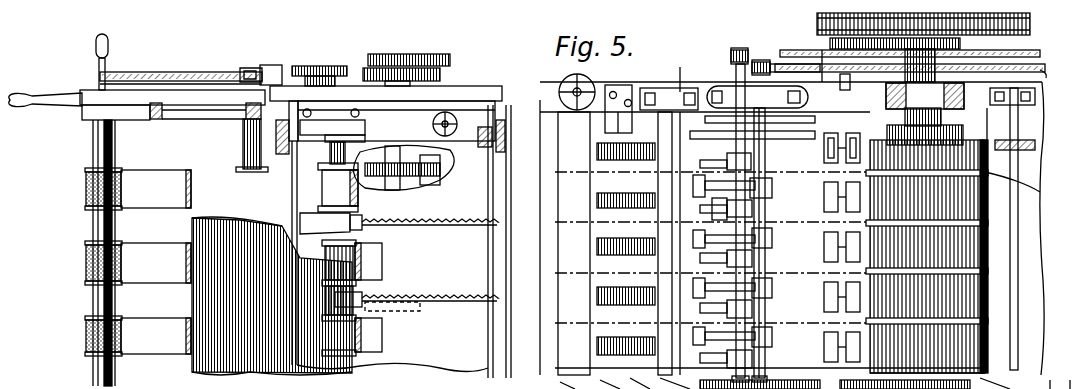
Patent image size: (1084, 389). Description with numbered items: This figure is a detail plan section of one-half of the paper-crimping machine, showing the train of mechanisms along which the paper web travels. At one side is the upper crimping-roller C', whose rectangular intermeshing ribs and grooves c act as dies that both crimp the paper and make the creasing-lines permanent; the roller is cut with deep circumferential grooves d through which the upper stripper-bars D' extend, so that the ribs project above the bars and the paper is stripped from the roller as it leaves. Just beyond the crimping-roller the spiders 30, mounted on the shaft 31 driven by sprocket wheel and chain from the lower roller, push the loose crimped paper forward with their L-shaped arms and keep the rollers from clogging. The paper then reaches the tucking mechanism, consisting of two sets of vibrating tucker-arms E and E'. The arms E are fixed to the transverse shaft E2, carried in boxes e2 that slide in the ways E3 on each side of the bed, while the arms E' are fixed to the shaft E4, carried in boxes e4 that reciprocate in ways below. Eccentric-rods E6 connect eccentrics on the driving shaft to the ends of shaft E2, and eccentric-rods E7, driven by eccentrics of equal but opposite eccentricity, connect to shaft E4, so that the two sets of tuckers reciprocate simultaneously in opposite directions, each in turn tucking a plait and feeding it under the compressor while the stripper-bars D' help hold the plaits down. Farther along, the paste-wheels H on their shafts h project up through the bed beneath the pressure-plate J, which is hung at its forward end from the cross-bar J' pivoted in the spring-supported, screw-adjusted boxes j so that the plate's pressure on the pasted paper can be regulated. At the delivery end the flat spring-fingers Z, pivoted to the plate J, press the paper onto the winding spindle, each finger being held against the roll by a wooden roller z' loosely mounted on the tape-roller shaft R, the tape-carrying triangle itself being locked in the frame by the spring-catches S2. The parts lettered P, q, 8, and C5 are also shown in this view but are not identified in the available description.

The spring-catches S2 is at (72, 95).
The shaft of the tape-rollers R is at (113, 178).
The plates P is at (156, 262).
The paste-wheel shaft h is at (388, 165).
The paste-wheel H is at (420, 178).
The wooden roller z' is at (399, 215).
The spring-fingers Z is at (370, 290).
The pressure-plate J is at (392, 346).
The cross-bar J' is at (514, 239).
The boxes j is at (560, 82).
The bar 8 is at (745, 72).
The boxes e4 is at (749, 45).
The boxes e2 is at (786, 55).
The upper stripper-bars D' is at (765, 223).
The coils q is at (612, 165).
The shaft E4 is at (772, 190).
The transverse shaft E2 is at (770, 210).
The ways E3 is at (693, 236).
The tucker-arms E' is at (745, 298).
The tucker-arms E is at (743, 347).
The gear wheel C5 is at (933, 24).
The spiders 30 is at (848, 150).
The eccentric-rods E7 is at (919, 46).
The eccentric-rods E6 is at (930, 60).
The shaft 31 is at (895, 96).
The upper crimping-roller C' is at (927, 256).
The ribs and grooves c is at (940, 342).
The circumferential grooves d is at (1018, 229).